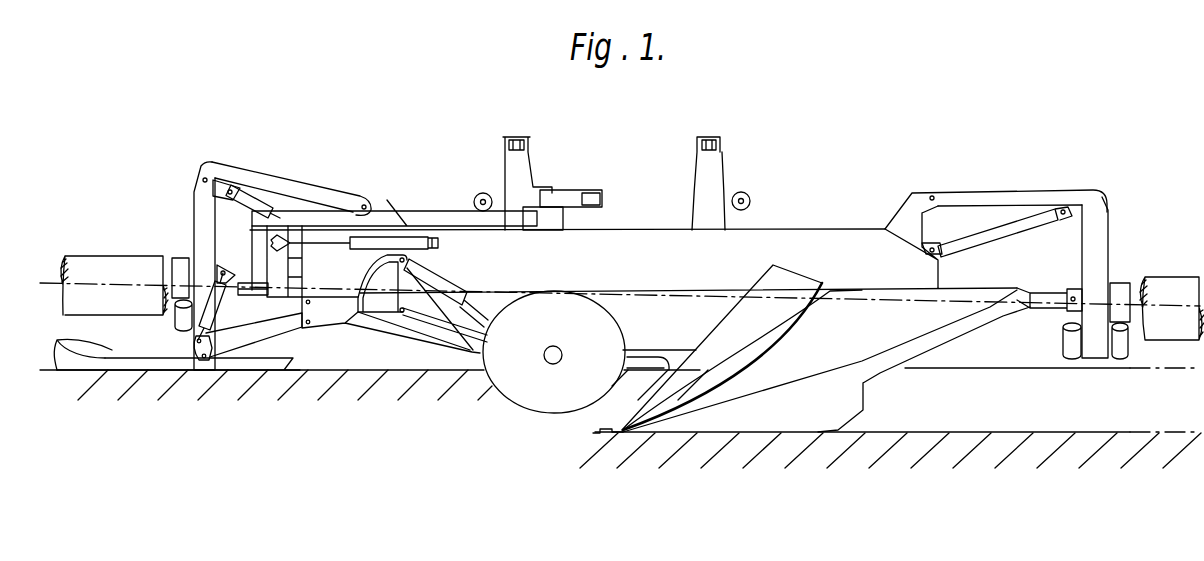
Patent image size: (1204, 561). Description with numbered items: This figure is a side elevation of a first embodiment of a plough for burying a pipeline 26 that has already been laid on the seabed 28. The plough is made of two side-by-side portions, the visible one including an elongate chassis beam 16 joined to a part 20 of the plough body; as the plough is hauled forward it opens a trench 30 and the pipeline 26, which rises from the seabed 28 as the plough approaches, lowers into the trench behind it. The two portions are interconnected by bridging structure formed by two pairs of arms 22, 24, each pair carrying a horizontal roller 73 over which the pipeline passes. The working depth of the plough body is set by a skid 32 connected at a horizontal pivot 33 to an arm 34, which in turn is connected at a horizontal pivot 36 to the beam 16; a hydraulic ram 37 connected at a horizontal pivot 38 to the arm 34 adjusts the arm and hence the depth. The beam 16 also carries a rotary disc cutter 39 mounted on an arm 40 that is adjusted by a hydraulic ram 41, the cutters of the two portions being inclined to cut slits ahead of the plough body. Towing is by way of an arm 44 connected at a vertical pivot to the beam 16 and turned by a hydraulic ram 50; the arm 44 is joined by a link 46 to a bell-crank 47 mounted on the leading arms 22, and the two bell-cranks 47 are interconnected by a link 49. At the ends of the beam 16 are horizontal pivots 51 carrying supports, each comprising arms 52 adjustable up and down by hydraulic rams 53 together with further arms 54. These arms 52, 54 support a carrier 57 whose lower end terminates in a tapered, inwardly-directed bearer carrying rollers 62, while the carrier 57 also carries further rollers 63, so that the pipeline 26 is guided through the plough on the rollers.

The chassis beam 16 is at (538, 265).
The plough body part 20 is at (860, 407).
The leading pair of arms 22 is at (506, 196).
The pair of arms 24 is at (688, 193).
The pipeline 26 is at (100, 259).
The seabed 28 is at (91, 355).
The trench 30 is at (1033, 423).
The skid 32 is at (142, 365).
The horizontal pivot 33 is at (203, 358).
The arm 34 is at (267, 336).
The horizontal pivot 36 is at (307, 327).
The hydraulic ram 37 is at (240, 308).
The horizontal pivot 38 is at (196, 332).
The rotary disc cutter 39 is at (568, 337).
The arm 40 is at (430, 323).
The hydraulic ram 41 is at (432, 268).
The arm 44 is at (255, 228).
The link 46 is at (412, 214).
The bell-crank 47 is at (565, 190).
The link 49 is at (592, 196).
The hydraulic ram 50 is at (368, 239).
The horizontal pivot 51 is at (364, 204).
The arm 52 is at (247, 177).
The hydraulic ram 53 is at (260, 233).
The further arm 54 is at (1047, 290).
The carrier 57 is at (204, 196).
The roller 62 is at (184, 325).
The roller 63 is at (177, 258).
The horizontal roller 73 is at (483, 193).